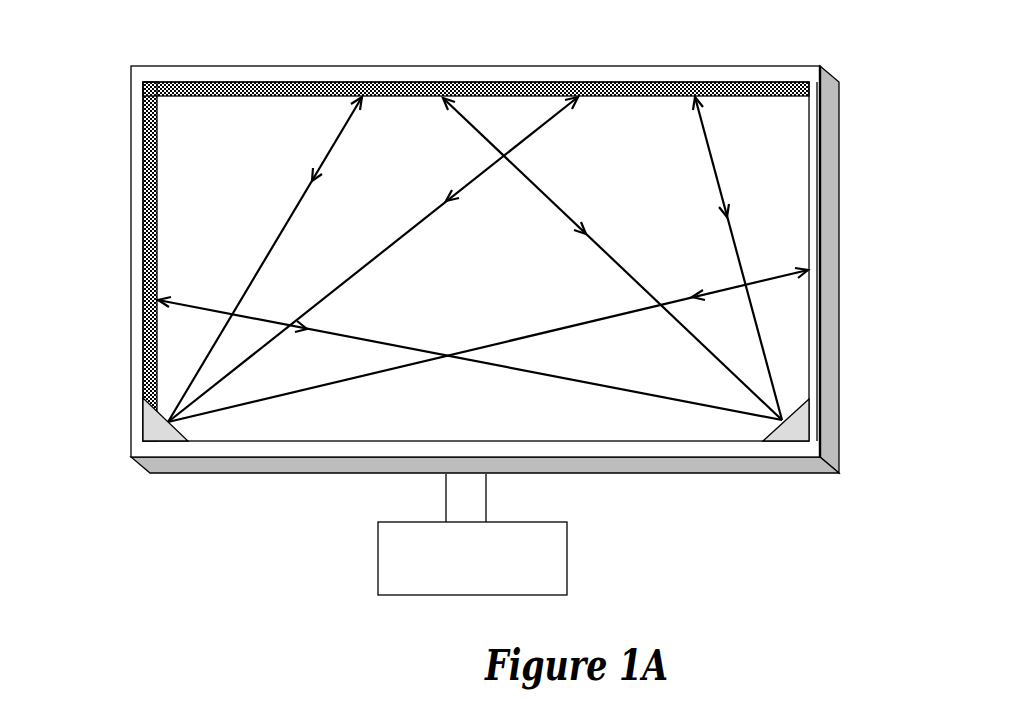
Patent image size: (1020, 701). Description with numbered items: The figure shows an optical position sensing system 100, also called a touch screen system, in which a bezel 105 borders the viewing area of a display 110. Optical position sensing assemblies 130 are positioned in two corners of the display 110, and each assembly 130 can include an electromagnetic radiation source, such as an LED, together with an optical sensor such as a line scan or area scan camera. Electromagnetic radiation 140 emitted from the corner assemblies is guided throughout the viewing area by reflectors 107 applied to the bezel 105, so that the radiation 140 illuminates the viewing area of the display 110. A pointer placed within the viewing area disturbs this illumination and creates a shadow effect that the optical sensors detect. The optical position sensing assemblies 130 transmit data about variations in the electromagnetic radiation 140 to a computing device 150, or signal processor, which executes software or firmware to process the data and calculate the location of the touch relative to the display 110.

The optical position sensing system 100 is at (80, 78).
The bezel 105 is at (828, 160).
The reflectors 107 is at (263, 93).
The display 110 is at (609, 130).
The optical position sensing assembly 130 is at (143, 410).
The electromagnetic radiation 140 is at (493, 343).
The computing device 150 is at (567, 560).